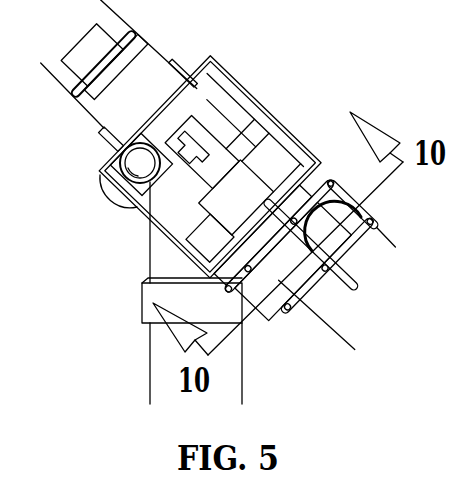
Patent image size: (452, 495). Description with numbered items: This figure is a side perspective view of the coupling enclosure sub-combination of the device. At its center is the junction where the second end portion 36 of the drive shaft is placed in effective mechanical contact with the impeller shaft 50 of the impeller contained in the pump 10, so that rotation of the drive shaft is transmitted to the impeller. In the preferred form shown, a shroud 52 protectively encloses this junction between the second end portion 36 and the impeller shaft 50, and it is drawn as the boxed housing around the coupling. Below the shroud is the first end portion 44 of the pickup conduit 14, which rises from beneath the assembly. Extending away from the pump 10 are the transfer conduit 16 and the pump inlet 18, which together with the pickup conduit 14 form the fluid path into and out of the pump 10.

The pump 10 is at (367, 212).
The pickup conduit 14 is at (150, 393).
The transfer conduit 16 is at (367, 248).
The pump inlet 18 is at (335, 333).
The second end portion of the drive shaft 36 is at (108, 143).
The first end portion of the pickup conduit 44 is at (146, 326).
The impeller shaft 50 is at (250, 143).
The shroud 52 is at (230, 76).